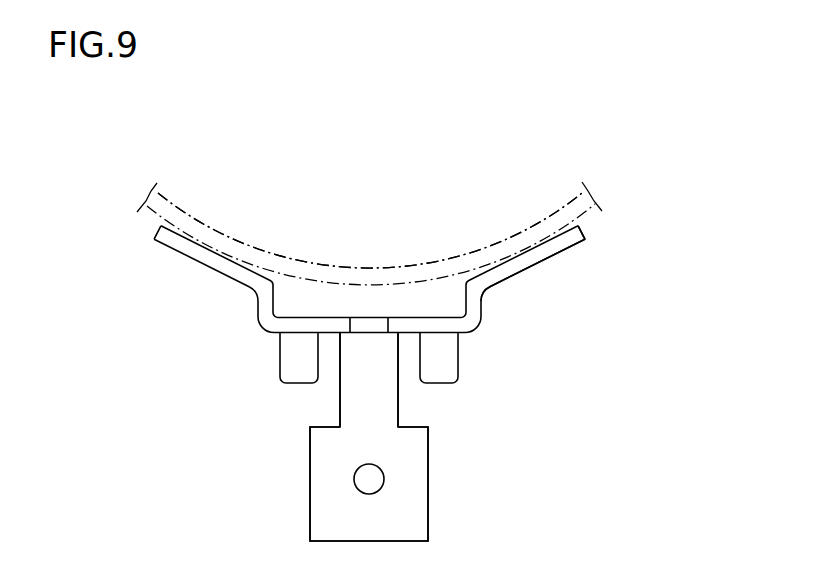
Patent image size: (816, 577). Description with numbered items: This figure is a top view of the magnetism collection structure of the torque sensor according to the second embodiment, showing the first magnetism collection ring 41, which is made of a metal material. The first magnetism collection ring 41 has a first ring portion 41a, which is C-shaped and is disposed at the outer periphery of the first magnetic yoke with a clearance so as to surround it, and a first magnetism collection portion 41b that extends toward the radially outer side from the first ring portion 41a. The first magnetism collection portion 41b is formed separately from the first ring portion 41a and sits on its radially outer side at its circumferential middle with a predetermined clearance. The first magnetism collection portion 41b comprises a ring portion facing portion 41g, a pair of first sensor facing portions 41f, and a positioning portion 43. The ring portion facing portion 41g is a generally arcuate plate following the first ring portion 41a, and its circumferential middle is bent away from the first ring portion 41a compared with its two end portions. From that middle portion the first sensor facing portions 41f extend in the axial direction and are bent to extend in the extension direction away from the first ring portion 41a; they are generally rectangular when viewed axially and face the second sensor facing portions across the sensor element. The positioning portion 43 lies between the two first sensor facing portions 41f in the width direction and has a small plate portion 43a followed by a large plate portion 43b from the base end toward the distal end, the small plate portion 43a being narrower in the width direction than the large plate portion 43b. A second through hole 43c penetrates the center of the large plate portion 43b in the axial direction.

The first magnetism collection ring 41 is at (695, 232).
The first ring portion 41a is at (590, 218).
The first magnetism collection portion 41b is at (594, 262).
The first sensor facing portions 41f is at (430, 373).
The ring portion facing portion 41g is at (493, 283).
The positioning portion 43 is at (520, 410).
The small plate portion 43a is at (388, 413).
The large plate portion 43b is at (418, 448).
The second through hole 43c is at (374, 489).